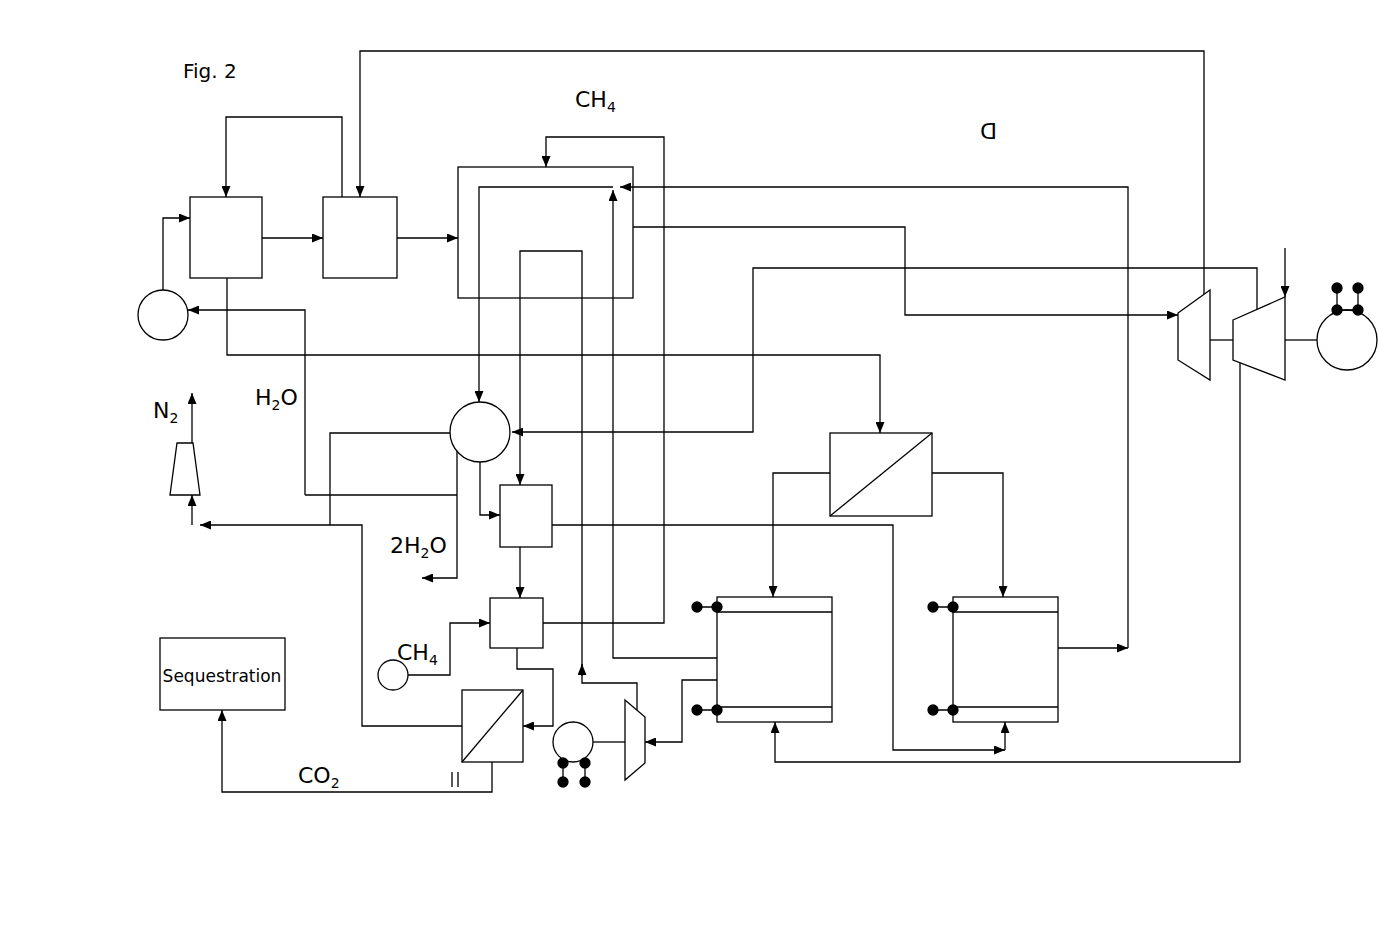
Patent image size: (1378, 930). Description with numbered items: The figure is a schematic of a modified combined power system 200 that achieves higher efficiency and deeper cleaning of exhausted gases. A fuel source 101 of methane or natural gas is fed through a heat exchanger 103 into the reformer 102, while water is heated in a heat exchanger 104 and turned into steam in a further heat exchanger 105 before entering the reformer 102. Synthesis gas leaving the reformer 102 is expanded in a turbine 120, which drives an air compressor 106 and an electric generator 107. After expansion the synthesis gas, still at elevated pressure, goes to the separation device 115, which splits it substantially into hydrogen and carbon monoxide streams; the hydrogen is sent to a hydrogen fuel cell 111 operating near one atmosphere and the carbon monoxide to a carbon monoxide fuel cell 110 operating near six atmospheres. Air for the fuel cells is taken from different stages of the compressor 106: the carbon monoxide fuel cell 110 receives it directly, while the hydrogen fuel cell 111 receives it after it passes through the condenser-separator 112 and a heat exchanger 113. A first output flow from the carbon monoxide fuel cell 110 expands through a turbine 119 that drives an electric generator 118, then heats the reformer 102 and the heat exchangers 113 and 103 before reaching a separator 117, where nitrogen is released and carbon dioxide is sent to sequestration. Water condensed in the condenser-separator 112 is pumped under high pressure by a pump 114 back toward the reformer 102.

The fuel source 101 is at (434, 656).
The reformer 102 is at (818, 423).
The heat exchanger 103 is at (521, 662).
The heat exchanger 104 is at (535, 275).
The heat exchanger 105 is at (390, 237).
The air compressor 106 is at (1046, 505).
The electric generator 107 is at (1347, 326).
The carbon monoxide fuel cell 110 is at (762, 659).
The hydrogen fuel cell 111 is at (874, 454).
The condenser-separator 112 is at (781, 423).
The heat exchanger 113 is at (752, 617).
The pump 114 is at (221, 356).
The separation device 115 is at (888, 515).
The separator 117 is at (492, 726).
The electric generator 118 is at (589, 754).
The turbine 119 is at (670, 730).
The turbine 120 is at (1205, 335).
The modified combined power system 200 is at (782, 455).